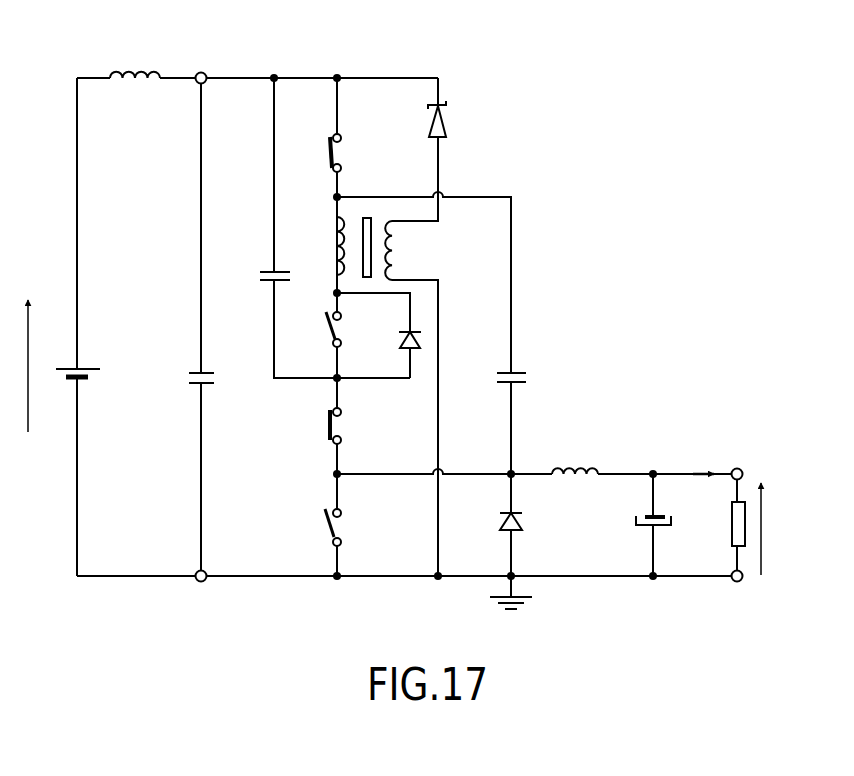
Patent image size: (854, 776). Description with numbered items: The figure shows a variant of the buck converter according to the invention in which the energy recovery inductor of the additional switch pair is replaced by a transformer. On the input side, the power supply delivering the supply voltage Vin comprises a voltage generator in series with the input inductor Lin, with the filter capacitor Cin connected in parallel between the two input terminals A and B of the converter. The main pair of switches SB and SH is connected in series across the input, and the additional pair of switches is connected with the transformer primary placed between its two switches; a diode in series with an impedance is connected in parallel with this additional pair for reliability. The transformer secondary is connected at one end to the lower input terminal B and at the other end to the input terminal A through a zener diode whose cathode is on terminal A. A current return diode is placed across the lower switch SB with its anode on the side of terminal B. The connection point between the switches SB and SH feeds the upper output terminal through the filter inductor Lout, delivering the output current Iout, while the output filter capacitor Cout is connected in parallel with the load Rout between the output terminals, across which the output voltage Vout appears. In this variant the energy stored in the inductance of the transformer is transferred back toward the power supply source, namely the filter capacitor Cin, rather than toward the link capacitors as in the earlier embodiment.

The input inductor Lin is at (140, 75).
The input terminal A is at (205, 72).
The input terminal B is at (206, 582).
The supply voltage Vin is at (44, 366).
The filter capacitor Cin is at (182, 386).
The switch SH is at (326, 425).
The switch SB is at (328, 538).
The filter inductor Lout is at (580, 467).
The output current Iout is at (696, 470).
The output filter capacitor Cout is at (645, 530).
The load Rout is at (731, 525).
The output voltage Vout is at (784, 529).